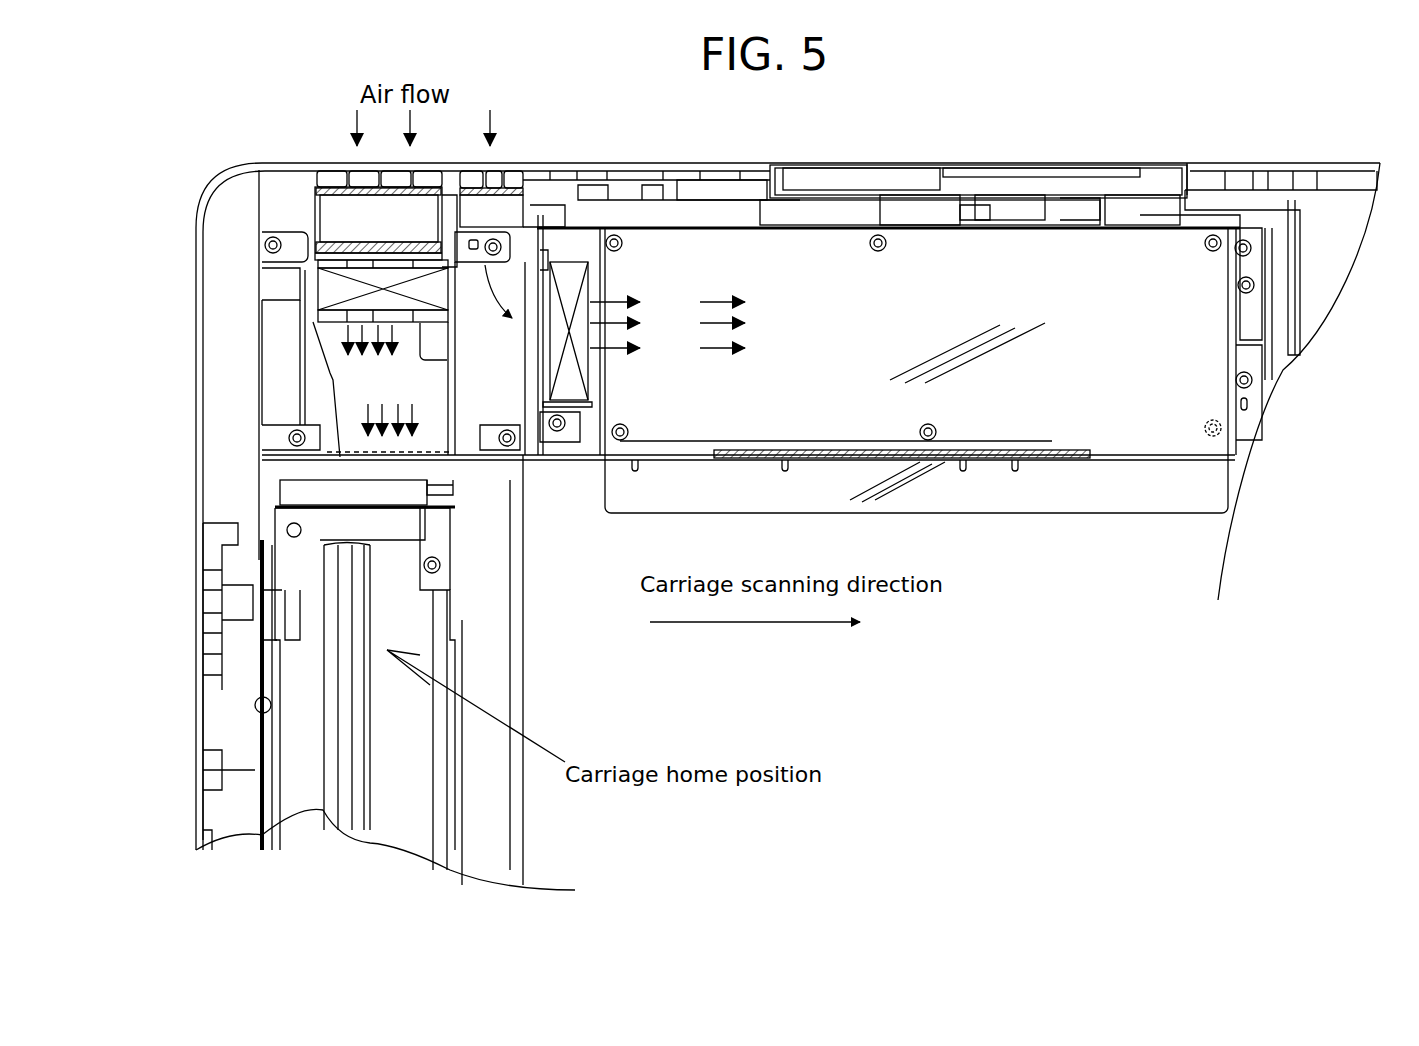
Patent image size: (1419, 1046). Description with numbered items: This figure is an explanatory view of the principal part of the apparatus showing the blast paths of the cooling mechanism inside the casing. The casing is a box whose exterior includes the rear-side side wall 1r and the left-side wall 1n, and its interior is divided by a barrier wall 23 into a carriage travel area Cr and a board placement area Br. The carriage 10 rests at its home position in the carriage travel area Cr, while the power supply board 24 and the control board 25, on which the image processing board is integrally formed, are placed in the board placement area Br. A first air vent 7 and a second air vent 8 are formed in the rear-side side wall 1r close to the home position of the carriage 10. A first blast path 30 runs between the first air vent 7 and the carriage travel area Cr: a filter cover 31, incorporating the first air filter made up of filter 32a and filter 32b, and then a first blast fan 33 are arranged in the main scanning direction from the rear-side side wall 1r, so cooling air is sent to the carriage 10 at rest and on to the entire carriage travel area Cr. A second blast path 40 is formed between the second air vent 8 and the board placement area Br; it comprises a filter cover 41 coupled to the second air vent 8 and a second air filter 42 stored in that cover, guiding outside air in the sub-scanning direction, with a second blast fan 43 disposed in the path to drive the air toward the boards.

The left-side wall 1n is at (197, 590).
The rear-side side wall 1r is at (877, 162).
The first air vent 7 is at (352, 175).
The second air vent 8 is at (497, 165).
The carriage 10 is at (290, 750).
The barrier wall 23 is at (698, 455).
The power supply board 24 is at (840, 430).
The control board 25 is at (1060, 505).
The first blast path 30 is at (381, 389).
The filter cover 31 is at (322, 205).
The filter 32a is at (316, 190).
The filter 32b is at (320, 246).
The first blast fan 33 is at (330, 292).
The second blast path 40 is at (667, 325).
The filter cover 41 is at (505, 180).
The second air filter 42 is at (500, 207).
The second blast fan 43 is at (570, 380).
The board placement area Br is at (850, 348).
The carriage travel area Cr is at (825, 709).